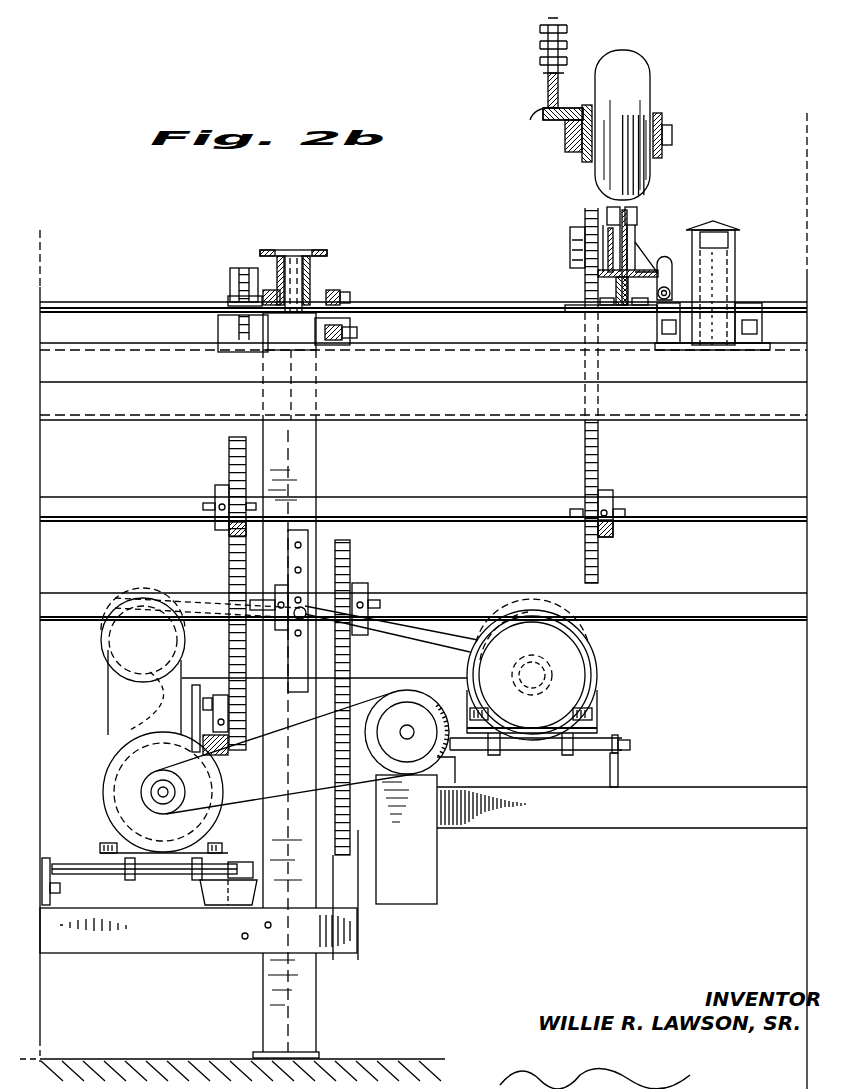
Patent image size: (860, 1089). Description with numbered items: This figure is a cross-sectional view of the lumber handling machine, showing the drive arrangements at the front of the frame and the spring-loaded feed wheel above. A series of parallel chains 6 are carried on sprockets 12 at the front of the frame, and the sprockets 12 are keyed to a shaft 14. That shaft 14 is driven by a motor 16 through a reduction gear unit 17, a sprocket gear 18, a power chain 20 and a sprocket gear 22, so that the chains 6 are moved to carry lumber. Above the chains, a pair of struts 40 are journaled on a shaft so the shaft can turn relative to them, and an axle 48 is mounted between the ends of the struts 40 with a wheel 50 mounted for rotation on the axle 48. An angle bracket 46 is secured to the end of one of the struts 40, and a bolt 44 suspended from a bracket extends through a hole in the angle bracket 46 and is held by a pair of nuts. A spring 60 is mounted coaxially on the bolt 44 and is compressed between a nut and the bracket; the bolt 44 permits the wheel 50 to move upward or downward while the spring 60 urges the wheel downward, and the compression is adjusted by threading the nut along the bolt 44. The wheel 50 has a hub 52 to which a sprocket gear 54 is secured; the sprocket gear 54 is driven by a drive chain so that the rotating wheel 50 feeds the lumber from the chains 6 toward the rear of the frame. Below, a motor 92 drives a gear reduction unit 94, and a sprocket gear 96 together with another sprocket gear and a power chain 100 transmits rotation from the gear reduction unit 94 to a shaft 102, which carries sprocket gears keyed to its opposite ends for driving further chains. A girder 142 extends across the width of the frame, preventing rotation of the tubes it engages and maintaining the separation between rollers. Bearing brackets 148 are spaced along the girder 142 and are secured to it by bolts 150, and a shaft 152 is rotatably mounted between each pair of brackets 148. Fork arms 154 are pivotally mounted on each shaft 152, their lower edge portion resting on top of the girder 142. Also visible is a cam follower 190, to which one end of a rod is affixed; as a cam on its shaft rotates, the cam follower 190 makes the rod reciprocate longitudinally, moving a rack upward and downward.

The parallel chains 6 is at (598, 452).
The sprocket 12 is at (607, 494).
The shaft 14 is at (730, 520).
The motor 16 is at (585, 680).
The reduction gear unit 17 is at (108, 712).
The sprocket gear 18 is at (220, 698).
The power chain 20 is at (229, 566).
The sprocket gear 22 is at (215, 488).
The struts 40 is at (662, 119).
The bolt 44 is at (548, 101).
The angle bracket 46 is at (535, 148).
The axle 48 is at (672, 138).
The wheel 50 is at (636, 86).
The hub 52 is at (586, 163).
The sprocket gear 54 is at (560, 114).
The spring 60 is at (545, 40).
The motor 92 is at (122, 790).
The gear reduction unit 94 is at (420, 884).
The sprocket gear 96 is at (366, 586).
The power chain 100 is at (352, 657).
The shaft 102 is at (724, 620).
The girder 142 is at (481, 414).
The bearing brackets 148 is at (735, 320).
The bolts 150 is at (752, 325).
The shaft 152 is at (770, 330).
The fork arms 154 is at (726, 240).
The cam follower 190 is at (664, 258).